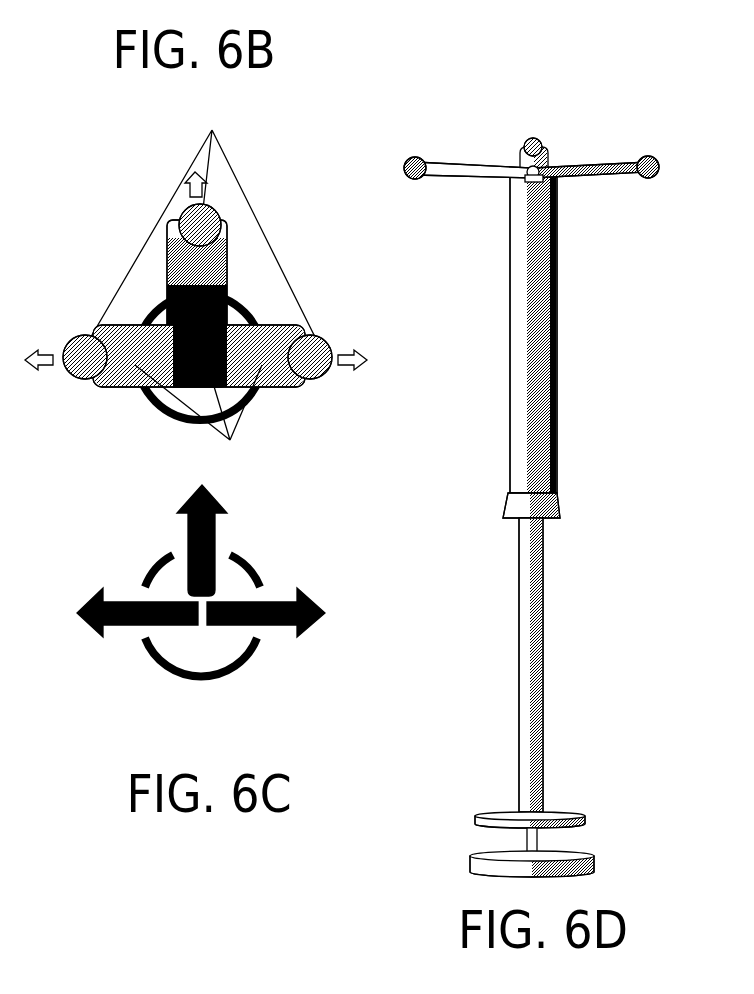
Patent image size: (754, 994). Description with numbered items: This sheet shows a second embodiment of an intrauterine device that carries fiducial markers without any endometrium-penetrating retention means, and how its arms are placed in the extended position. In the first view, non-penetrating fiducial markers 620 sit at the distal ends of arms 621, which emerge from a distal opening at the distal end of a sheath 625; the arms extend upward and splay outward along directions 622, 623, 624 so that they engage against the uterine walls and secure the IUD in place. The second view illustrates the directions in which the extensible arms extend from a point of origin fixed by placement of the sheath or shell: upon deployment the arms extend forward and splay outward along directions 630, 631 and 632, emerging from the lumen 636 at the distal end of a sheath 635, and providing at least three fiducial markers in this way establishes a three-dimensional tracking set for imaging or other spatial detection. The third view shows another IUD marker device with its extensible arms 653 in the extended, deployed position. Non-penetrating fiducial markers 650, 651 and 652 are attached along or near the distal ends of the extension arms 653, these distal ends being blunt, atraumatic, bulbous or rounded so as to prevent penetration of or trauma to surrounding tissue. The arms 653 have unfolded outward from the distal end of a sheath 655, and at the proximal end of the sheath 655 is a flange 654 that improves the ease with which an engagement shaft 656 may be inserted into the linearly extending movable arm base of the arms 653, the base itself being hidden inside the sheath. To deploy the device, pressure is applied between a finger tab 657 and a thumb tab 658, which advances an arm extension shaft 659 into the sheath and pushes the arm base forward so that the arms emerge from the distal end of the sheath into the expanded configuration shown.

In FIG. 6B, the non-penetrating fiducial markers 620 is at (202, 220).
In FIG. 6B, the arms 621 is at (198, 420).
In FIG. 6B, the direction 622 is at (332, 348).
In FIG. 6B, the direction 623 is at (59, 348).
In FIG. 6B, the direction 624 is at (188, 193).
In FIG. 6B, the sheath 625 is at (143, 402).
In FIG. 6C, the direction 630 is at (228, 540).
In FIG. 6C, the direction 631 is at (266, 625).
In FIG. 6C, the direction 632 is at (137, 625).
In FIG. 6C, the sheath 635 is at (207, 677).
In FIG. 6C, the lumen 636 is at (207, 642).
In FIG. 6D, the non-penetrating fiducial marker 650 is at (386, 167).
In FIG. 6D, the non-penetrating fiducial marker 651 is at (533, 143).
In FIG. 6D, the non-penetrating fiducial marker 652 is at (678, 160).
In FIG. 6D, the extensible arms 653 is at (607, 180).
In FIG. 6D, the flange 654 is at (555, 503).
In FIG. 6D, the sheath 655 is at (540, 382).
In FIG. 6D, the engagement shaft 656 is at (550, 557).
In FIG. 6D, the finger tab 657 is at (570, 807).
In FIG. 6D, the thumb tab 658 is at (595, 845).
In FIG. 6D, the arm extension shaft 659 is at (523, 840).